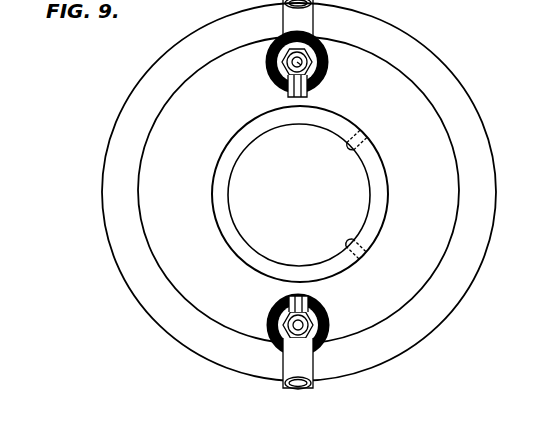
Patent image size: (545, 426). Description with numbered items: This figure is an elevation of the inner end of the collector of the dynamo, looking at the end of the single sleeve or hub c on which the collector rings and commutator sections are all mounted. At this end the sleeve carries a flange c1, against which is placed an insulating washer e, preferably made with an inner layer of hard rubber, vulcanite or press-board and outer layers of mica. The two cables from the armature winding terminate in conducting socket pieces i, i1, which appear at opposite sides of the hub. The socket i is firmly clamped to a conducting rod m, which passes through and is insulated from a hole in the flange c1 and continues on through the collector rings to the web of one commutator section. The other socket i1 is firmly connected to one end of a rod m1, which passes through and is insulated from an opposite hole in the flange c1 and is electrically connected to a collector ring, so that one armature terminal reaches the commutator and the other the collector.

The insulating washer e is at (495, 185).
The flange c1 is at (298, 190).
The sleeve or hub c is at (228, 183).
The conducting socket piece i1 is at (314, 22).
The conducting rod m1 is at (322, 79).
The conducting rod m is at (322, 311).
The conducting socket piece i is at (314, 363).